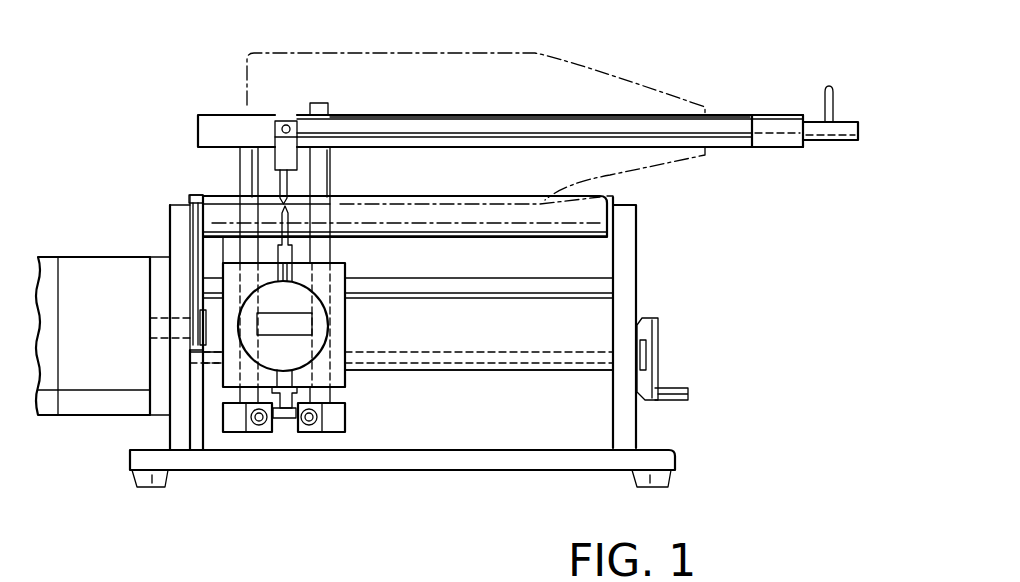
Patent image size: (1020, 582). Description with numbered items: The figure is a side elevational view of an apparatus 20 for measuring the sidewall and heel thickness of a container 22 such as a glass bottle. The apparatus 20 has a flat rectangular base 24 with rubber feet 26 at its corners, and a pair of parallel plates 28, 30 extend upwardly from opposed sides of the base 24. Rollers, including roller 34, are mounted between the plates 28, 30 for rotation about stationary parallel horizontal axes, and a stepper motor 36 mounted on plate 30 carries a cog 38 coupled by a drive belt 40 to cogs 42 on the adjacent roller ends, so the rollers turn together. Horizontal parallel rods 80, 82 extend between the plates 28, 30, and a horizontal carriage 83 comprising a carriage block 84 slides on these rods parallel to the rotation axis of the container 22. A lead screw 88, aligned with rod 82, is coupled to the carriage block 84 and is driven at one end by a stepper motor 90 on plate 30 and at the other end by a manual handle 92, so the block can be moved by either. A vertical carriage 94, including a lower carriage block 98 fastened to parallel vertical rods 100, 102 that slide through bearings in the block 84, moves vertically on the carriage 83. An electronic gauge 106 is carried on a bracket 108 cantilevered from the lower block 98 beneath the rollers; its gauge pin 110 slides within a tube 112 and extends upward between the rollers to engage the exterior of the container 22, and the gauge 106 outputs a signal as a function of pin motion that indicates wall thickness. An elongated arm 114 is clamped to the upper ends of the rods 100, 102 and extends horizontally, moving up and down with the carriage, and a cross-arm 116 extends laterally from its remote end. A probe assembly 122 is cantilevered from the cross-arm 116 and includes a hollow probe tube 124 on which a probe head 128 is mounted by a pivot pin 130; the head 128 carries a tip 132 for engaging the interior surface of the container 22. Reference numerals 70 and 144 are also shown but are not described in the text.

The apparatus 20 is at (681, 58).
The container 22 is at (418, 52).
The base 24 is at (669, 452).
The rubber feet 26 is at (150, 483).
The plate 28 is at (637, 228).
The plate 30 is at (176, 423).
The roller 34 is at (600, 196).
The stepper motor 36 is at (82, 268).
The cog 38 is at (190, 352).
The drive belt 40 is at (197, 280).
The cogs 42 is at (190, 216).
The lower element 70 is at (312, 581).
The rod 80 is at (506, 290).
The rod 82 is at (561, 350).
The horizontal carriage 83 is at (346, 377).
The carriage block 84 is at (342, 338).
The lead screw 88 is at (568, 378).
The stepper motor 90 is at (85, 405).
The manual handle 92 is at (658, 336).
The vertical carriage 94 is at (242, 432).
The lower carriage block 98 is at (340, 432).
The vertical rod 100 is at (239, 163).
The vertical rod 102 is at (330, 160).
The electronic gauge 106 is at (300, 362).
The bracket 108 is at (290, 422).
The gauge pin 110 is at (285, 222).
The tube 112 is at (289, 268).
The arm 114 is at (205, 125).
The cross-arm 116 is at (791, 143).
The probe assembly 122 is at (722, 118).
The probe tube 124 is at (488, 124).
The probe head 128 is at (292, 138).
The pivot pin 130 is at (286, 124).
The tip 132 is at (290, 190).
The pin 144 is at (825, 95).